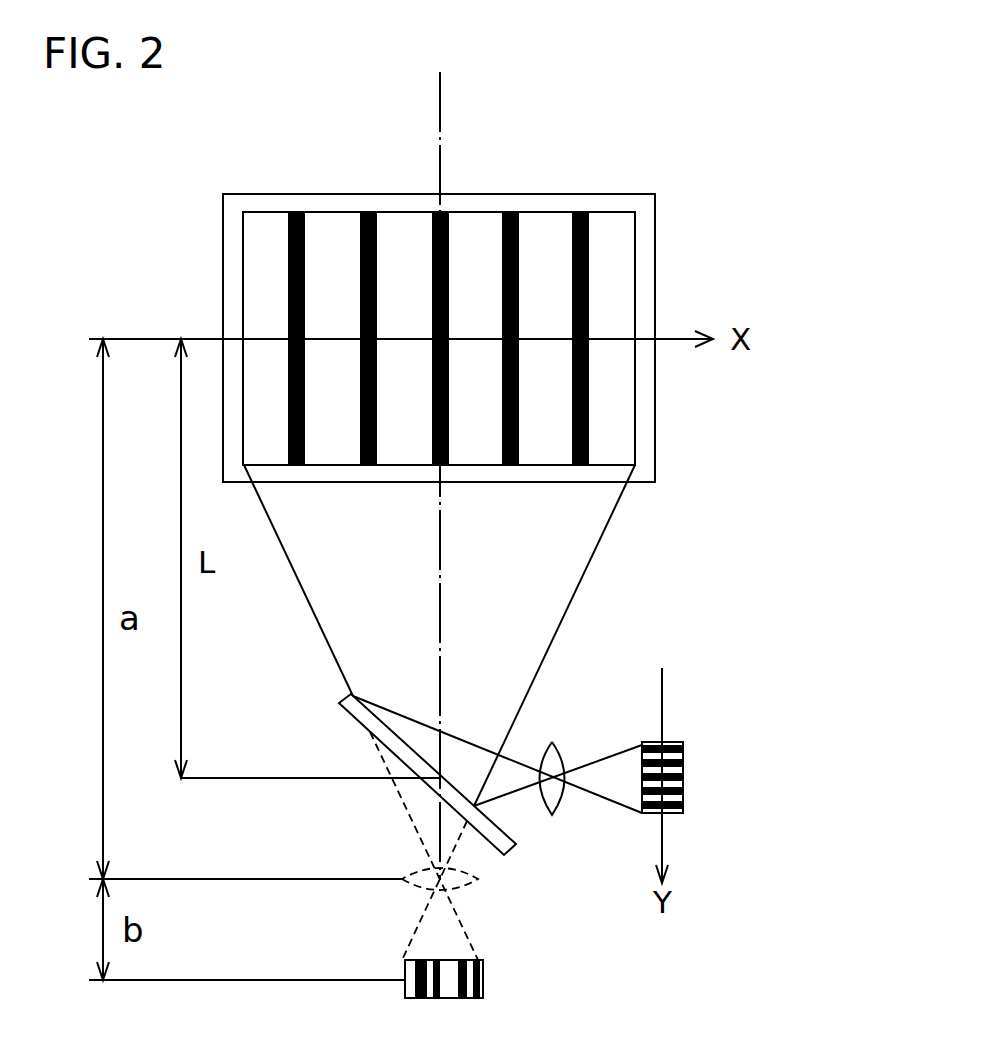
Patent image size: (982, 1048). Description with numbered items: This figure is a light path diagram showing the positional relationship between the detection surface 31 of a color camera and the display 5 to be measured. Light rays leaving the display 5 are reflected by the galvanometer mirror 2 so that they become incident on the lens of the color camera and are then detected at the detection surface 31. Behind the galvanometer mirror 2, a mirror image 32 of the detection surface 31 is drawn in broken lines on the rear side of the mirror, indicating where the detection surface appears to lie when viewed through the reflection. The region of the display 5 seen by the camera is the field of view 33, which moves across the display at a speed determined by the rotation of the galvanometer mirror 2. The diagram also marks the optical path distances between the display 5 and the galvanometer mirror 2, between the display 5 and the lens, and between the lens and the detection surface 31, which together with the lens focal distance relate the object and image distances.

The display 5 is at (655, 227).
The field of view 33 is at (635, 270).
The galvanometer mirror 2 is at (352, 715).
The detection surface 31 is at (683, 775).
The mirror image 32 is at (483, 978).